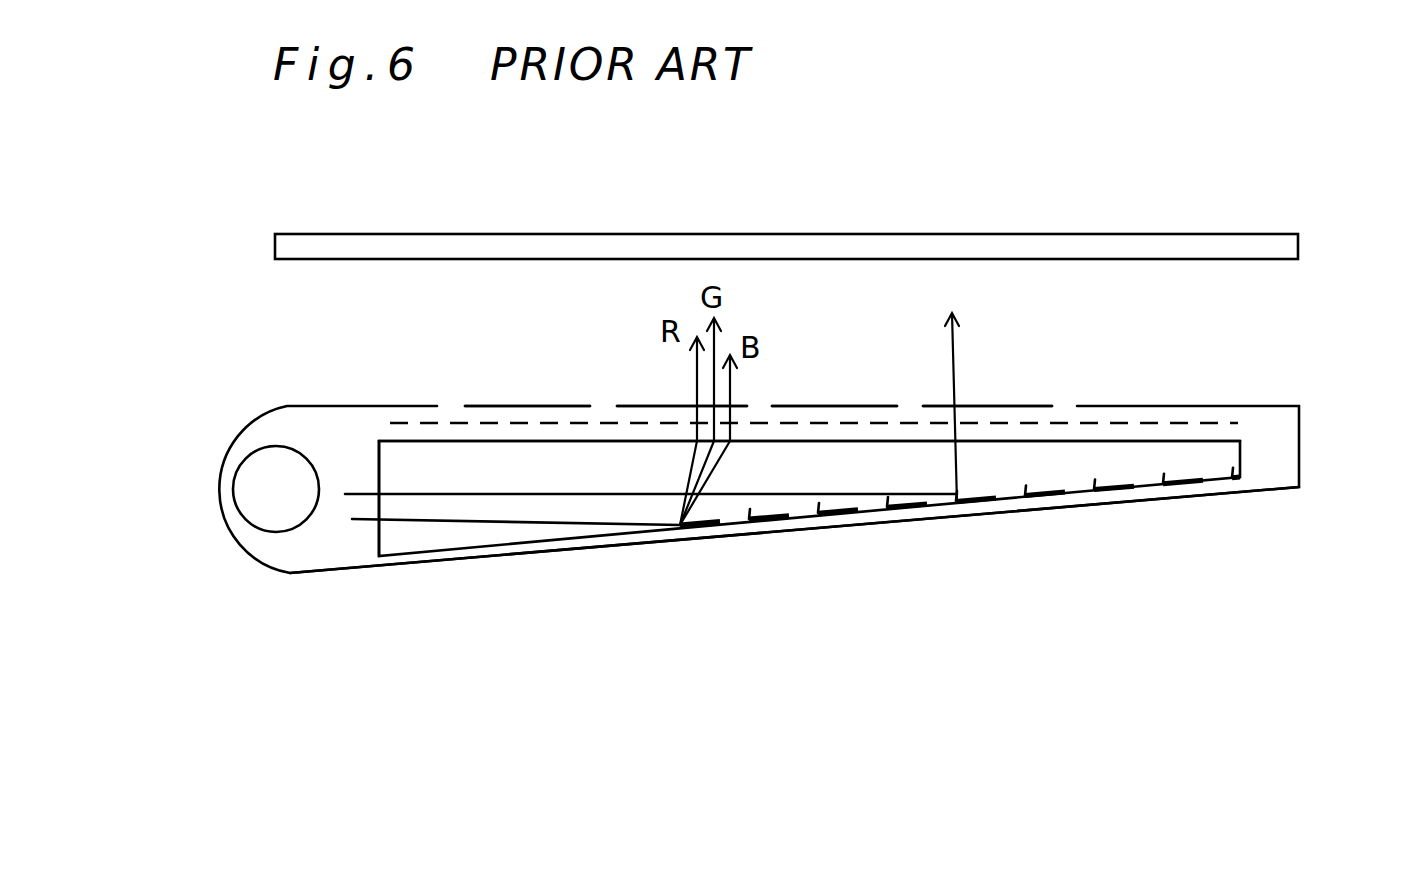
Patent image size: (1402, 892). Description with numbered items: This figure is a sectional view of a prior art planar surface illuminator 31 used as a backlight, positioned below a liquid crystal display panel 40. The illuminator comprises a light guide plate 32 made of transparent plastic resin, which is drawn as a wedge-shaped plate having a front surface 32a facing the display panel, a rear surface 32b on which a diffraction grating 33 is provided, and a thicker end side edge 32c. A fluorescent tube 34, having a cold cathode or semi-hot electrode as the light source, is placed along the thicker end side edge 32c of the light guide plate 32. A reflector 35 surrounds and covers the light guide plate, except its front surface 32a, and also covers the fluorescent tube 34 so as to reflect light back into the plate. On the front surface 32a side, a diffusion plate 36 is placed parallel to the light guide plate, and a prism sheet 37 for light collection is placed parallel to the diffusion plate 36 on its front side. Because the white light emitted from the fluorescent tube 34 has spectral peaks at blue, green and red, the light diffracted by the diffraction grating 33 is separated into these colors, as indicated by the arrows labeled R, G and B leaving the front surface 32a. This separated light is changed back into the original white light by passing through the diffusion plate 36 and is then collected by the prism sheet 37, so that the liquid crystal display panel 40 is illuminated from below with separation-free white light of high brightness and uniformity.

The planar surface illuminator 31 is at (1289, 381).
The light guide plate 32 is at (1247, 450).
The front surface 32a is at (1150, 442).
The rear surface 32b is at (1133, 486).
The thicker end side edge 32c is at (377, 468).
The diffraction grating 33 is at (722, 533).
The fluorescent tube 34 is at (250, 523).
The reflector 35 is at (865, 530).
The diffusion plate 36 is at (1032, 425).
The prism sheet 37 is at (783, 407).
The liquid crystal display panel 40 is at (1227, 233).